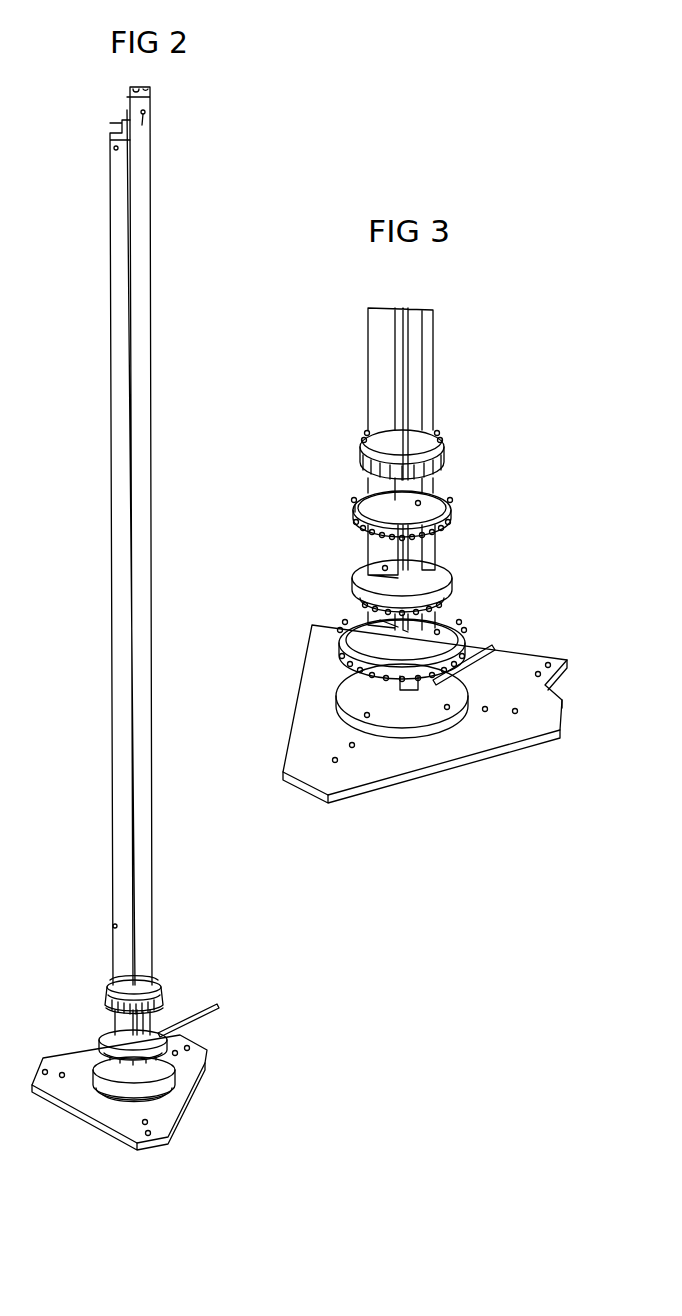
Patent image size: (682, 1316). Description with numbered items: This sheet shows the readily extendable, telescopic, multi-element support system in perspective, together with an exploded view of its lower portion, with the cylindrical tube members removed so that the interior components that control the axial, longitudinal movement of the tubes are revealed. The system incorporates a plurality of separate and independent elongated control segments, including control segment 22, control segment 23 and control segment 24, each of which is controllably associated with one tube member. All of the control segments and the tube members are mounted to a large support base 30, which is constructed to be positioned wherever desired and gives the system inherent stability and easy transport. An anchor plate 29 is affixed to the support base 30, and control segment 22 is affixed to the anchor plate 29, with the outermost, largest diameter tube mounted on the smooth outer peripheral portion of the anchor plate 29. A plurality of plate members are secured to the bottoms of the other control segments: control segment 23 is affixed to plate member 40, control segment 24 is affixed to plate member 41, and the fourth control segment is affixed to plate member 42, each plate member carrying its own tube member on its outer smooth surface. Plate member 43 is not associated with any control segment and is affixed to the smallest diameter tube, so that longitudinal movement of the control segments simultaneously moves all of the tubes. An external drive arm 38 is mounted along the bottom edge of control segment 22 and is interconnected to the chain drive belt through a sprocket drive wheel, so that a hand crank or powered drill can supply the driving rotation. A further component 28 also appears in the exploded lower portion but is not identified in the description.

In FIG. 2, the control segment 22 is at (152, 109).
In FIG. 3, the control segment 22 is at (407, 330).
In FIG. 2, the control segment 23 is at (112, 178).
In FIG. 3, the control segment 24 is at (397, 553).
In FIG. 3, the gear ring 28 is at (438, 483).
In FIG. 2, the anchor plate 29 is at (170, 1073).
In FIG. 3, the anchor plate 29 is at (432, 727).
In FIG. 2, the support base 30 is at (87, 1095).
In FIG. 3, the support base 30 is at (530, 715).
In FIG. 2, the external drive arm 38 is at (218, 1006).
In FIG. 3, the external drive arm 38 is at (480, 643).
In FIG. 2, the plate member 40 is at (107, 1033).
In FIG. 3, the plate member 40 is at (357, 631).
In FIG. 2, the plate member 41 is at (107, 1010).
In FIG. 2, the plate member 42 is at (96, 970).
In FIG. 3, the plate member 42 is at (352, 512).
In FIG. 2, the plate member 43 is at (160, 994).
In FIG. 3, the plate member 43 is at (442, 427).